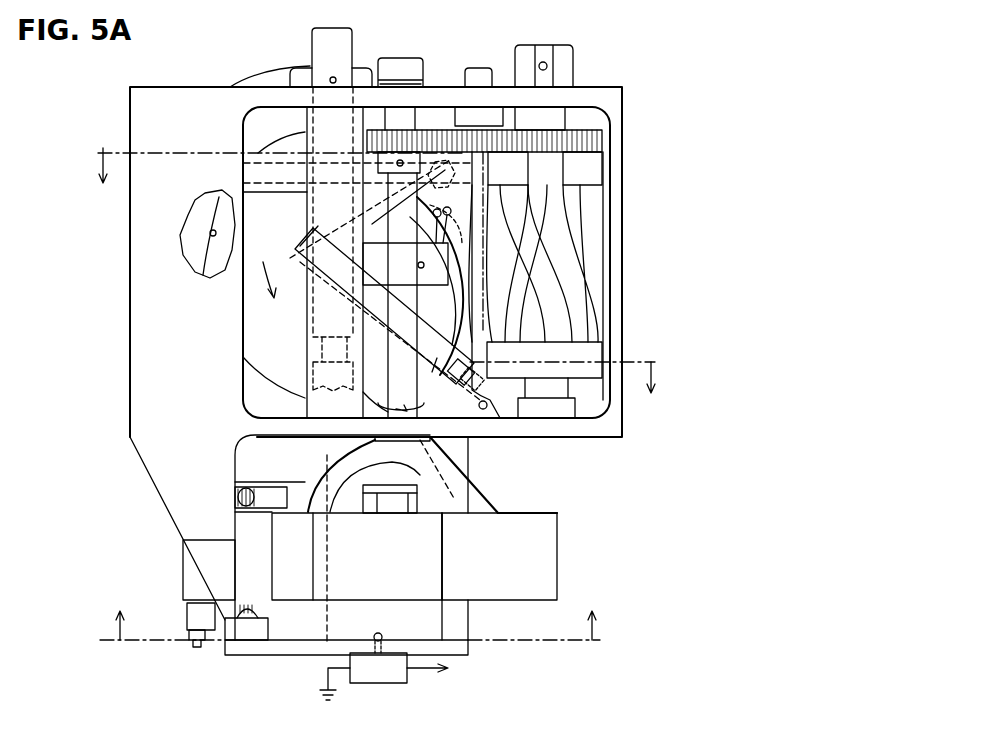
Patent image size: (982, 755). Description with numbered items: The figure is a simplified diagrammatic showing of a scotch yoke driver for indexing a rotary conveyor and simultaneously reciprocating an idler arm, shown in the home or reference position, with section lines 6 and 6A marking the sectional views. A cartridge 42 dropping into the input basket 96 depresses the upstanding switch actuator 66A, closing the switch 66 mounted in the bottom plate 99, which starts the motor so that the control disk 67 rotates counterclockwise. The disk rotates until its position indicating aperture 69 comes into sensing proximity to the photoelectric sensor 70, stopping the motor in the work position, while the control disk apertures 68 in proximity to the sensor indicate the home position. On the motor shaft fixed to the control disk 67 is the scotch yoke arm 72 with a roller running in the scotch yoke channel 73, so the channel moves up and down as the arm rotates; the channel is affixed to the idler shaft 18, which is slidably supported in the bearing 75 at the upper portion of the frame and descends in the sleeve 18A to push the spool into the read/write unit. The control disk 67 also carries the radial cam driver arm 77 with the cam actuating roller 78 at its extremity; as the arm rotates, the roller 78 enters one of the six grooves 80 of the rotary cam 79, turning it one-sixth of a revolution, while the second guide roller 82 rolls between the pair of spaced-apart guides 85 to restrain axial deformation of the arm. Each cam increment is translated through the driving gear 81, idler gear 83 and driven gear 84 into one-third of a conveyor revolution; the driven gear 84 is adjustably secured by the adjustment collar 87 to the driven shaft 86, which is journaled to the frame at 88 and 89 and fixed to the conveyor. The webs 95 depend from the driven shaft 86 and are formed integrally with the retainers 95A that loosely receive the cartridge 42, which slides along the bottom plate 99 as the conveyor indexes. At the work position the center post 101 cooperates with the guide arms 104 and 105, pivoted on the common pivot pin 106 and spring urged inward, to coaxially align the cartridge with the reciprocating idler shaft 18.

The driving gear 81 is at (601, 110).
The section line 6A is at (377, 282).
The section line 6 is at (350, 613).
The journal 88 is at (397, 78).
The bearing 75 is at (302, 68).
The idler gear 83 is at (510, 120).
The driven gear 84 is at (421, 134).
The adjustment collar 87 is at (400, 174).
The scotch yoke channel 73 is at (262, 176).
The idler shaft 18 is at (310, 213).
The sleeve 18A is at (306, 330).
The position indicating aperture 69 is at (210, 233).
The control disk 67 is at (265, 376).
The scotch yoke arm 72 is at (376, 226).
The radial cam driver arm 77 is at (426, 377).
The cam actuating roller 78 is at (468, 386).
The driven shaft 86 is at (413, 375).
The second guide roller 82 is at (466, 352).
The photoelectric sensor 70 is at (405, 264).
The control disk apertures 68 is at (440, 241).
The grooves 80 is at (573, 303).
The rotary cam 79 is at (587, 240).
The guides 85 is at (482, 318).
The bottom plate 99 is at (470, 651).
The journal 89 is at (448, 447).
The webs 95 is at (348, 480).
The cartridge 42 is at (446, 481).
The retainers 95A is at (522, 513).
The input basket 96 is at (458, 549).
The center post 101 is at (388, 505).
The guide arm 104 is at (256, 484).
The pivot pin 106 is at (198, 646).
The guide arm 105 is at (268, 634).
The switch actuator 66A is at (382, 634).
The switch 66 is at (393, 681).